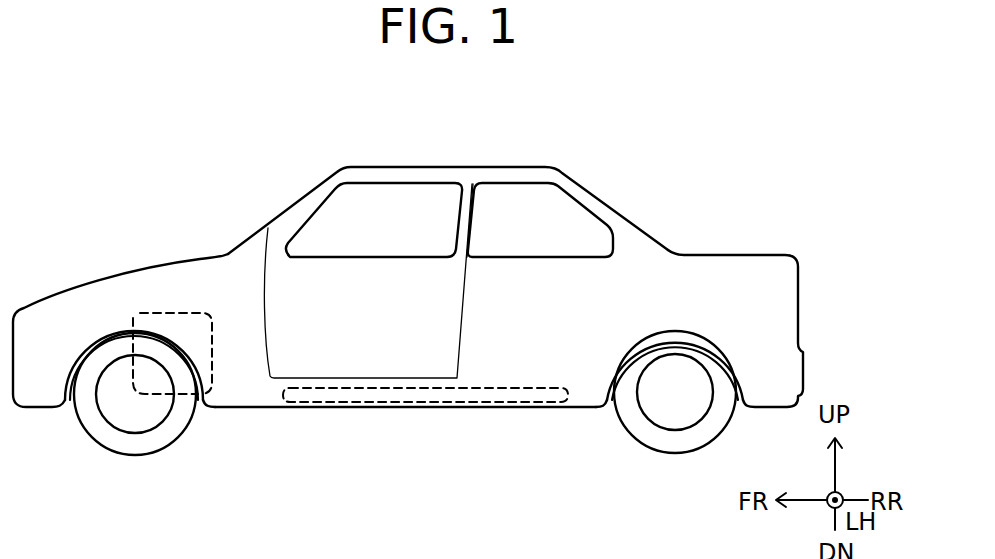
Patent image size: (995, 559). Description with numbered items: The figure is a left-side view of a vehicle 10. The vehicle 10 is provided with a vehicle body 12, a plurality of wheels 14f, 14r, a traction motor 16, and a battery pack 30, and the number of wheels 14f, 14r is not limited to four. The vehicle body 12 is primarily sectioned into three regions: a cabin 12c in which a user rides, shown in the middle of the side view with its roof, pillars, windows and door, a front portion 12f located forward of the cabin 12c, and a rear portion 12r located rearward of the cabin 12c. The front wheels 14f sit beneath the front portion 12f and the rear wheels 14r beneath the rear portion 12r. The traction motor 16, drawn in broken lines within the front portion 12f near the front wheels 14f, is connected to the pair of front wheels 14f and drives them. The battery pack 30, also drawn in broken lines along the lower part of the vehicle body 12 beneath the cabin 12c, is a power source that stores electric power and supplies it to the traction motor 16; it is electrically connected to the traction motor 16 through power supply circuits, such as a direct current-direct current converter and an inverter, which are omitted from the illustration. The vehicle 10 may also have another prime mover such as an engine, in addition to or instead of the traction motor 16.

The vehicle 10 is at (757, 128).
The vehicle body 12 is at (488, 167).
The front portion 12f is at (125, 294).
The cabin 12c is at (400, 202).
The rear portion 12r is at (759, 278).
The front wheels 14f is at (110, 433).
The rear wheels 14r is at (665, 453).
The traction motor 16 is at (212, 345).
The battery pack 30 is at (465, 410).